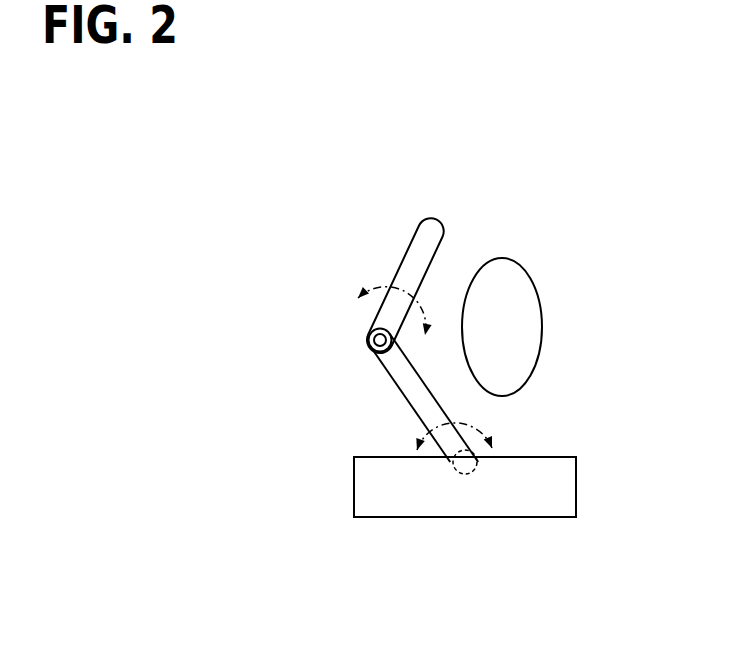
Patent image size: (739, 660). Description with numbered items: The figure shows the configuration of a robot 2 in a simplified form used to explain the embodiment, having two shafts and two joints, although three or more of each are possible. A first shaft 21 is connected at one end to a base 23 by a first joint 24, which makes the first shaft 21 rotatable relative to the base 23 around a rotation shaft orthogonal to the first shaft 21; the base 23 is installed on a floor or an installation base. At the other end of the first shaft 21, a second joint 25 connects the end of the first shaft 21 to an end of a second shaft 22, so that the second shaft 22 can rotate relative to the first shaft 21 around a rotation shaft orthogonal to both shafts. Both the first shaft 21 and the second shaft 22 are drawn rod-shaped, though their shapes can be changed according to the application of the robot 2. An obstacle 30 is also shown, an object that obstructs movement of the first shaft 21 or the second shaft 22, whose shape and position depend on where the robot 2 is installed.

The robot 2 is at (312, 189).
The first shaft 21 is at (403, 398).
The second shaft 22 is at (408, 250).
The base 23 is at (576, 481).
The first joint 24 is at (455, 474).
The second joint 25 is at (370, 342).
The obstacle 30 is at (538, 286).